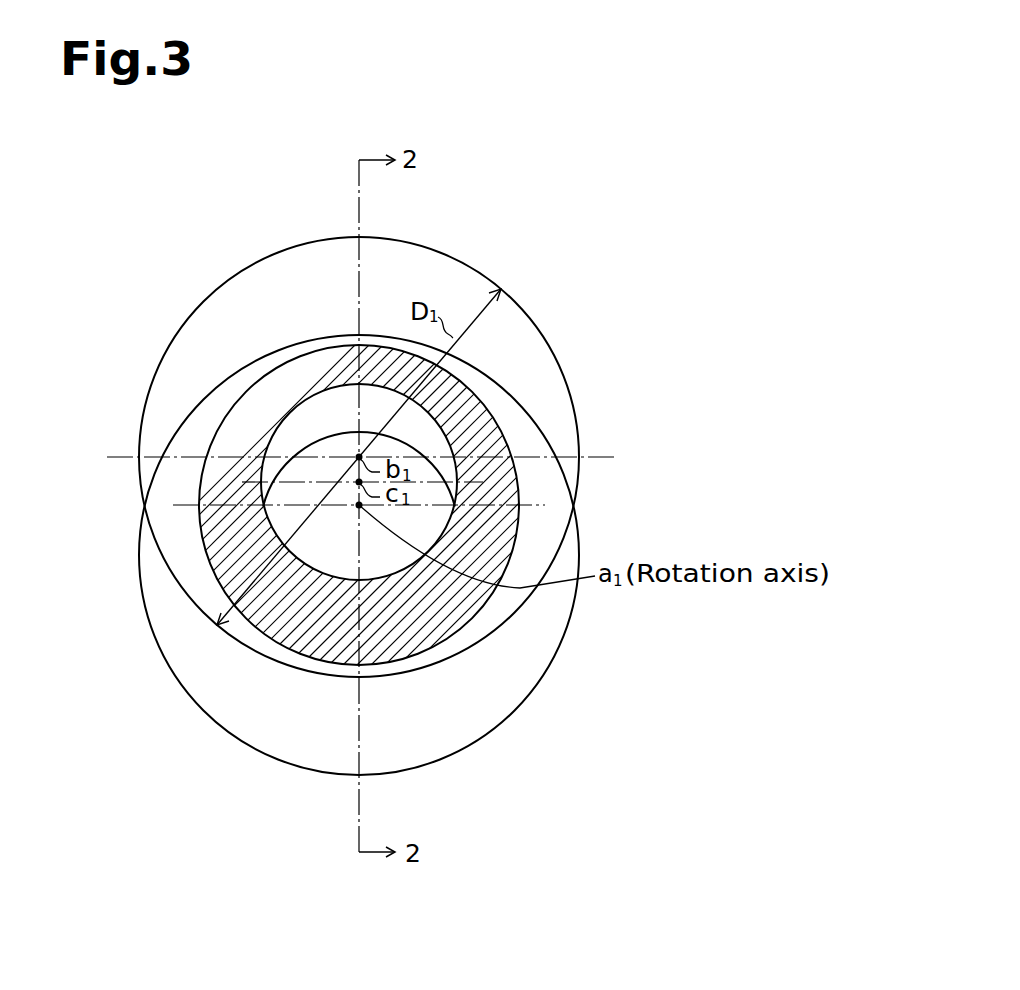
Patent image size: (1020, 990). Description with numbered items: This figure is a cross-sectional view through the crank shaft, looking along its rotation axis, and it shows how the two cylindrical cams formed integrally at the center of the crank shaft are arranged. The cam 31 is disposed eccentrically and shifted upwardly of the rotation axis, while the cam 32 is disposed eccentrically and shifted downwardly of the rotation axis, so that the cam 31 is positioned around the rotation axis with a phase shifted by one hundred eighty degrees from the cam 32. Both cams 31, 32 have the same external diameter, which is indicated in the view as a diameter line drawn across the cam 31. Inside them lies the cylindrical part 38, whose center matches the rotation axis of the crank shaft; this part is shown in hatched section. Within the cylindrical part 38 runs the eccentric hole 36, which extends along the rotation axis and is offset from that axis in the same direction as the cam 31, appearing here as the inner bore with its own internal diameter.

The cam 31 is at (463, 262).
The cam 32 is at (240, 740).
The eccentric hole 36 is at (338, 390).
The cylindrical part 38 is at (287, 360).